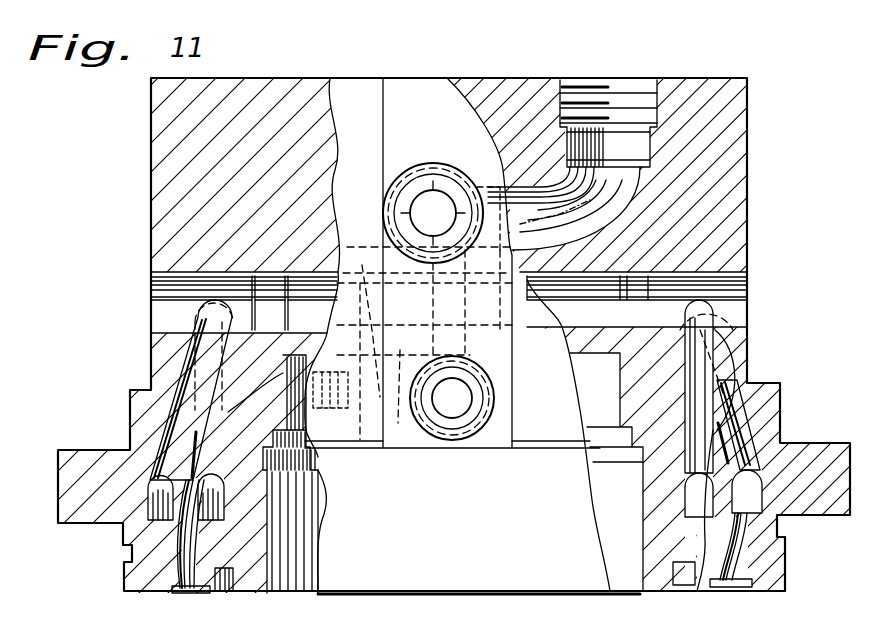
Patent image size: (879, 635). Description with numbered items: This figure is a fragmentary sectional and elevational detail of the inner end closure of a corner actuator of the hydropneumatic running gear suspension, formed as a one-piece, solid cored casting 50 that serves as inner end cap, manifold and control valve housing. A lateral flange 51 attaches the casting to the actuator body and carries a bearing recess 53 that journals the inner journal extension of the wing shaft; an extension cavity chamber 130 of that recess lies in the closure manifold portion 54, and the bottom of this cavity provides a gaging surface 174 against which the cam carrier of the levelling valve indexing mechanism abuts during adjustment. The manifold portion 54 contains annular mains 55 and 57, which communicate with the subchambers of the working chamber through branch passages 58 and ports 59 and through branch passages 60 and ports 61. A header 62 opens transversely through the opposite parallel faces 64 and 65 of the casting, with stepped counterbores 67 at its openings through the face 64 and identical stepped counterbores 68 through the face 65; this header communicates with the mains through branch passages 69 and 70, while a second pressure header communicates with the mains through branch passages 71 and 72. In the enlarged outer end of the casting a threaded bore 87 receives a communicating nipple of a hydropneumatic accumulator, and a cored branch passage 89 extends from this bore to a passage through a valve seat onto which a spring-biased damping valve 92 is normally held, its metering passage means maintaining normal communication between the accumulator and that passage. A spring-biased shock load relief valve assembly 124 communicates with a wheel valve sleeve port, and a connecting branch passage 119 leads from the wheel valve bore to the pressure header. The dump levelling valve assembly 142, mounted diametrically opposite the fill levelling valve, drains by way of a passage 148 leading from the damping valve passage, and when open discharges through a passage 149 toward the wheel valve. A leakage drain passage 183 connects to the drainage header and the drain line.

The casting 50 is at (152, 131).
The face 64 is at (152, 179).
The face 65 is at (748, 220).
The header 62 is at (330, 272).
The stepped counterbores 67 is at (152, 293).
The stepped counterbores 68 is at (740, 290).
The leakage drain passage 183 is at (352, 267).
The damping valve 92 is at (440, 148).
The relief valve assembly 124 is at (516, 186).
The threaded bores 87 is at (628, 87).
The cored branch passages 89 is at (598, 226).
The passage 148 is at (432, 320).
The extension cavity chamber 130 is at (622, 369).
The connecting branch passage 119 is at (563, 362).
The gaging surface 174 is at (484, 398).
The dump levelling valve assembly 142 is at (483, 425).
The passage 149 is at (398, 424).
The branch passage 70 is at (700, 353).
The branch passage 69 is at (183, 388).
The branch passage 72 is at (207, 450).
The branch passage 71 is at (736, 438).
The annular main 57 is at (148, 496).
The lateral flange 51 is at (75, 508).
The bearing recess 53 is at (268, 540).
The annular main 55 is at (318, 485).
The branch passages 58 is at (128, 583).
The ports 59 is at (190, 593).
The branch passages 60 is at (740, 561).
The ports 61 is at (728, 586).
The manifold portion 54 is at (765, 582).